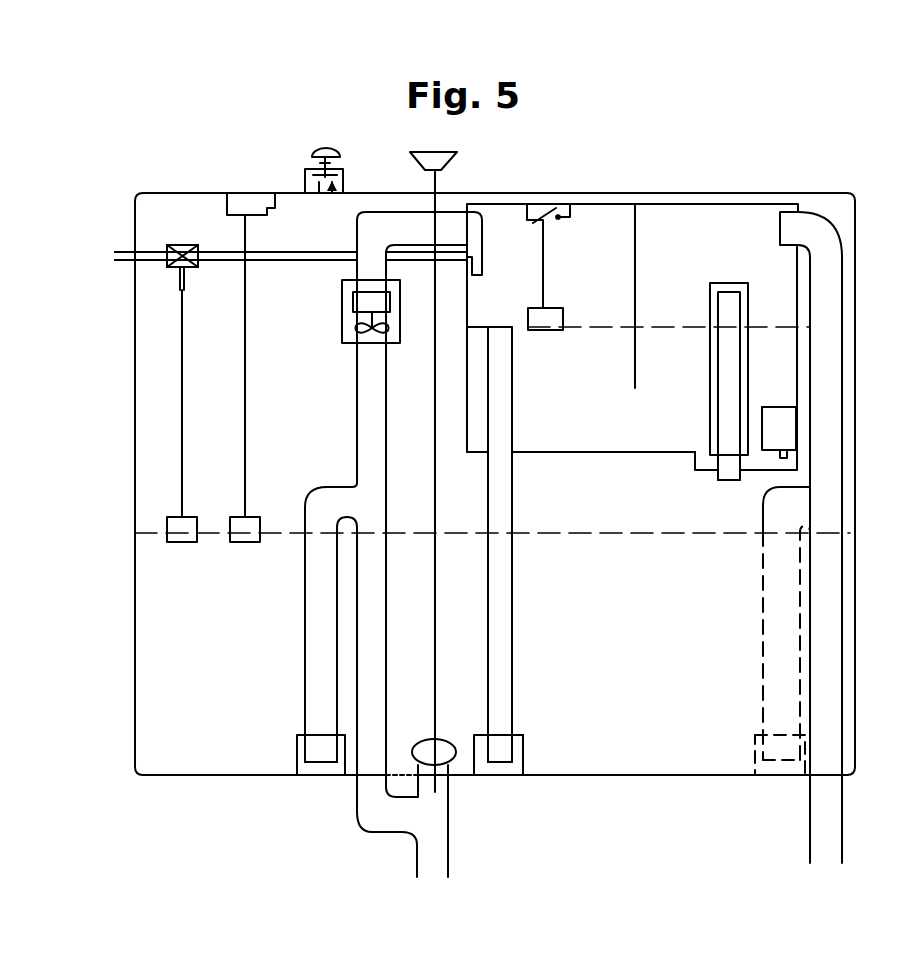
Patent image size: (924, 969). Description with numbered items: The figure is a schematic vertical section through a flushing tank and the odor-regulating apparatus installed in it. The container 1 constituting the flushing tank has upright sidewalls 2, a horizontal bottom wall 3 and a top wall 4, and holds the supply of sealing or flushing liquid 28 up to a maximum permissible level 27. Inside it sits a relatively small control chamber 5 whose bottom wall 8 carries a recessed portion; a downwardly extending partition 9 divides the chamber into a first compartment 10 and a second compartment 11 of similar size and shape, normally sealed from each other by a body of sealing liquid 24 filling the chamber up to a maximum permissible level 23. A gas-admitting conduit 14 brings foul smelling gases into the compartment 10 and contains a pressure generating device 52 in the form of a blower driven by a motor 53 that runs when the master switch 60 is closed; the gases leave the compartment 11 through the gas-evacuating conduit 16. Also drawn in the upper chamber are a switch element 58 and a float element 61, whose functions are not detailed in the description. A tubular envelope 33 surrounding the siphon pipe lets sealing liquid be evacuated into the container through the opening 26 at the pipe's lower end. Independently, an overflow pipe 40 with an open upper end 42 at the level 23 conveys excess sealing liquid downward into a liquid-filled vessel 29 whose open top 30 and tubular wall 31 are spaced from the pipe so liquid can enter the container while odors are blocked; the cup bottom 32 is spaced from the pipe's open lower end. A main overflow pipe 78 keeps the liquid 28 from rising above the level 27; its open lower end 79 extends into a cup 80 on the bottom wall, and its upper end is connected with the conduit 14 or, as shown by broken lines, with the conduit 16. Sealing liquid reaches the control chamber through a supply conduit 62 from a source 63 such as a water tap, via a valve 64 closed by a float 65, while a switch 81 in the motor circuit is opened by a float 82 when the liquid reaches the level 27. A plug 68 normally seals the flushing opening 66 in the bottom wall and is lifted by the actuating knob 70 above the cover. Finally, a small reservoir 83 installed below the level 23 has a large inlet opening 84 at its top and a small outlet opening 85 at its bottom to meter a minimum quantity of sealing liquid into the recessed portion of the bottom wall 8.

The container 1 is at (468, 483).
The sidewalls 2 is at (133, 633).
The bottom wall 3 is at (190, 778).
The top wall 4 is at (185, 192).
The control chamber 5 is at (600, 225).
The bottom wall 8 is at (605, 455).
The partition 9 is at (637, 290).
The first compartment 10 is at (574, 266).
The second compartment 11 is at (699, 266).
The gas-admitting conduit 14 is at (367, 240).
The gas-evacuating conduit 16 is at (838, 243).
The maximum permissible level 23 is at (683, 332).
The sealing liquid 24 is at (559, 396).
The opening 26 is at (727, 483).
The maximum permissible level 27 is at (578, 535).
The liquid 28 is at (162, 735).
The vessel 29 is at (480, 763).
The top 30 is at (520, 735).
The tubular wall 31 is at (525, 750).
The tube bottom 32 is at (500, 770).
The tubular envelope 33 is at (748, 300).
The overflow pipe 40 is at (510, 630).
The open upper end 42 is at (498, 330).
The pressure generating device 52 is at (350, 332).
The motor 53 is at (358, 300).
The level switch 58 is at (541, 215).
The master switch 60 is at (315, 152).
The float 61 is at (565, 318).
The supply conduit 62 is at (302, 262).
The source 63 is at (128, 250).
The valve 64 is at (180, 248).
The float 65 is at (185, 520).
The flushing opening 66 is at (427, 775).
The plug 68 is at (443, 752).
The actuating knob 70 is at (455, 162).
The main overflow pipe 78 is at (320, 630).
The lower end 79 is at (323, 762).
The cup 80 is at (297, 750).
The switch 81 is at (250, 203).
The float 82 is at (252, 520).
The reservoir 83 is at (790, 425).
The inlet opening 84 is at (775, 405).
The outlet opening 85 is at (782, 462).